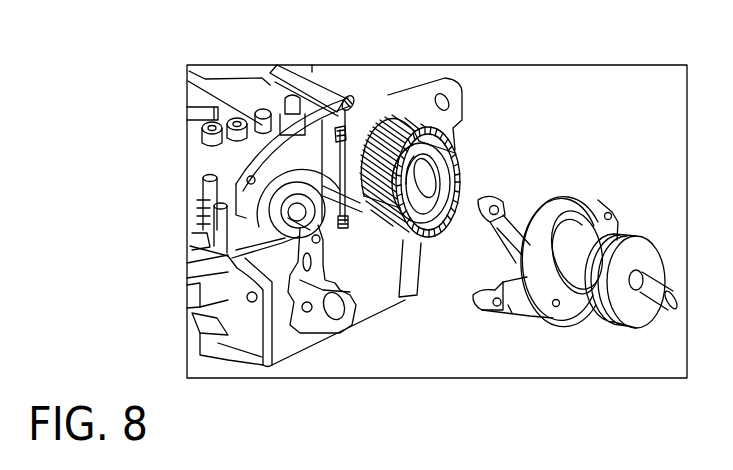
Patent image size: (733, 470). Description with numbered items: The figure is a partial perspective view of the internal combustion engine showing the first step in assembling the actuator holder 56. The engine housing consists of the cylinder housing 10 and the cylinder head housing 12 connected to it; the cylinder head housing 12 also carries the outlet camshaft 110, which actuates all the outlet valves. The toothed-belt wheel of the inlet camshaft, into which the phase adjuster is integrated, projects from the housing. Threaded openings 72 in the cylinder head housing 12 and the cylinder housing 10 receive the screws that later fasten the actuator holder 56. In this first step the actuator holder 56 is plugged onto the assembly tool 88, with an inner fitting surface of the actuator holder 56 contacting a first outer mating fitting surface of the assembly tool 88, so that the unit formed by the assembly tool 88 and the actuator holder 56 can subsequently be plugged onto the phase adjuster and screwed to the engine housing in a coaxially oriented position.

The cylinder housing 10 is at (377, 292).
The cylinder head housing 12 is at (272, 92).
The actuator holder 56 is at (600, 195).
The threaded openings 72 is at (345, 220).
The assembly tool 88 is at (644, 255).
The outlet camshaft 110 is at (294, 209).